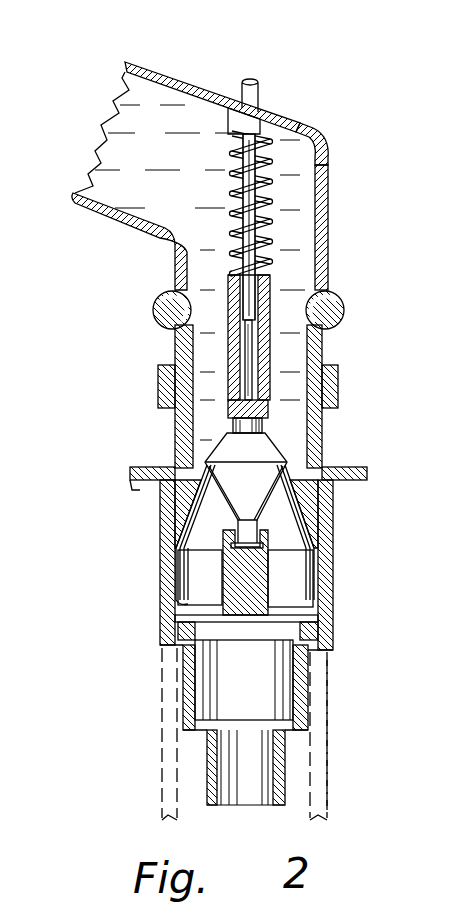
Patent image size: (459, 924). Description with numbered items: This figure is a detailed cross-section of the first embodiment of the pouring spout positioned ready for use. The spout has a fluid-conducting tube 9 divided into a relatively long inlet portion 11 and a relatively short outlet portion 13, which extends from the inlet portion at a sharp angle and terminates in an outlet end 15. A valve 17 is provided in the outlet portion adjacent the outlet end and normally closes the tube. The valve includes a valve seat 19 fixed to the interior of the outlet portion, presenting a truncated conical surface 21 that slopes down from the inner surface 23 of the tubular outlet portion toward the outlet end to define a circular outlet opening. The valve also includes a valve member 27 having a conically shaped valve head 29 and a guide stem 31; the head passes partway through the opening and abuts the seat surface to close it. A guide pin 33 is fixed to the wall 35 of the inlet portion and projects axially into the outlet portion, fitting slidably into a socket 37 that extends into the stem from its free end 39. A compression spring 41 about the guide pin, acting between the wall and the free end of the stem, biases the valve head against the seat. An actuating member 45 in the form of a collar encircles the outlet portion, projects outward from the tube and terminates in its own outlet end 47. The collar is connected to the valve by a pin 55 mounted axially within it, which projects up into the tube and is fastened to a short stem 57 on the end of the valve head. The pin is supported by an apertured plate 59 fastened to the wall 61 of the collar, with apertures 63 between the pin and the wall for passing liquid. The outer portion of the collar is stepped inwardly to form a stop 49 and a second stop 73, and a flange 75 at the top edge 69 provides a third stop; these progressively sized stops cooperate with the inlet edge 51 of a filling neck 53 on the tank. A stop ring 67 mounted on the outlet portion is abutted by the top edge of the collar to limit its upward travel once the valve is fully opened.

The fluid-conducting tube 9 is at (208, 59).
The inlet portion 11 is at (158, 72).
The outlet portion 13 is at (331, 200).
The outlet end 15 is at (292, 553).
The valve 17 is at (305, 443).
The valve seat 19 is at (338, 466).
The truncated conical surface 21 is at (206, 442).
The inner surface 23 is at (203, 375).
The valve member 27 is at (270, 352).
The valve head 29 is at (290, 502).
The guide stem 31 is at (271, 305).
The guide pin 33 is at (260, 94).
The wall 35 is at (308, 132).
The socket 37 is at (248, 338).
The free end 39 is at (272, 278).
The compression spring 41 is at (272, 180).
The actuating member 45 is at (154, 580).
The outlet end of collar 47 is at (223, 806).
The stop 49 is at (160, 657).
The inlet edge 51 is at (328, 655).
The filling neck 53 is at (328, 730).
The pin 55 is at (270, 596).
The short stem 57 is at (225, 522).
The apertured plate 59 is at (170, 627).
The collar wall 61 is at (175, 556).
The apertures 63 is at (175, 597).
The stop ring 67 is at (160, 387).
The top edge 69 is at (138, 467).
The second stop 73 is at (193, 733).
The flange 75 is at (138, 492).